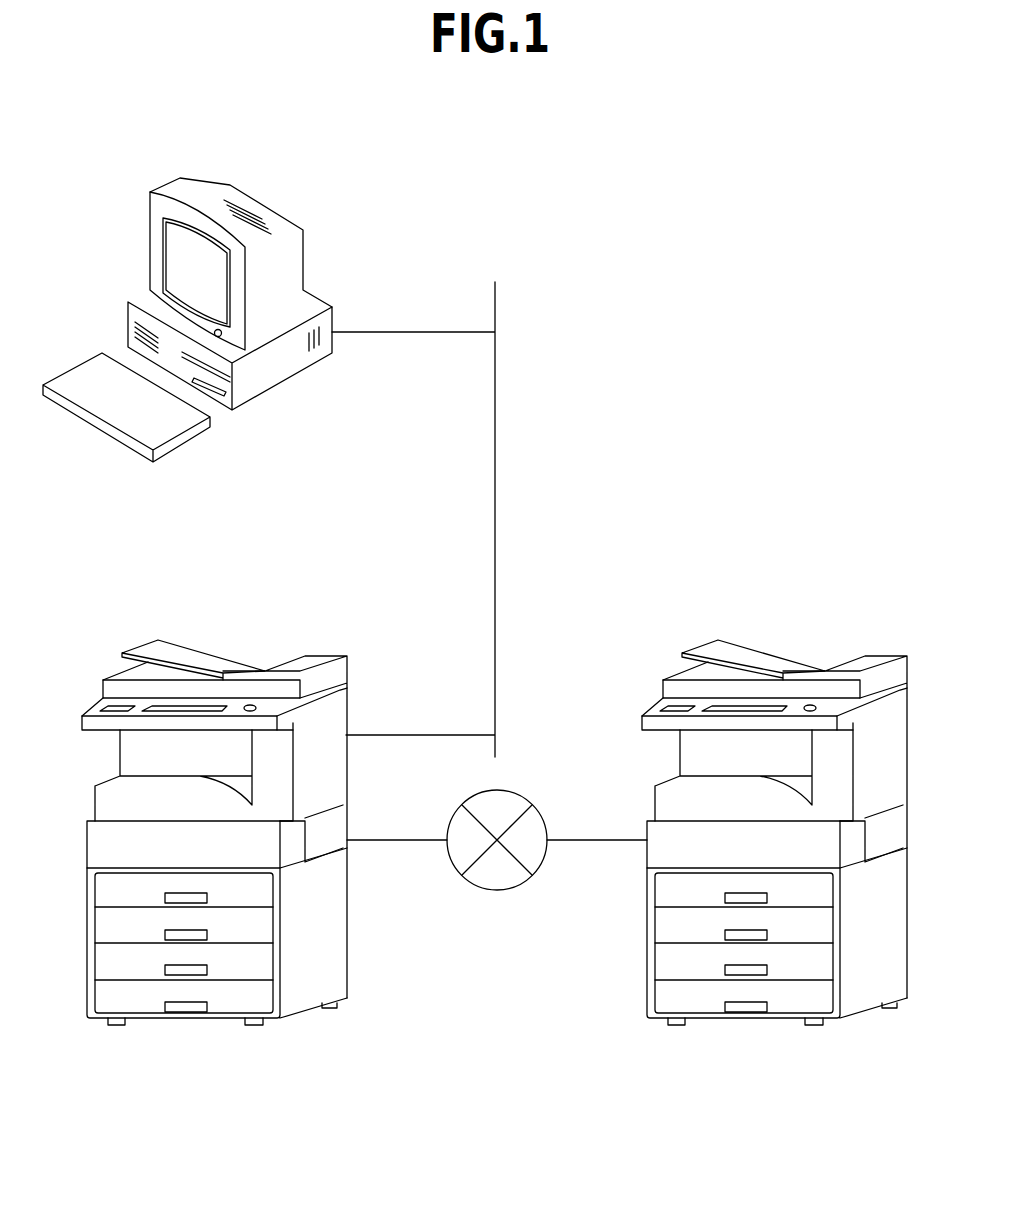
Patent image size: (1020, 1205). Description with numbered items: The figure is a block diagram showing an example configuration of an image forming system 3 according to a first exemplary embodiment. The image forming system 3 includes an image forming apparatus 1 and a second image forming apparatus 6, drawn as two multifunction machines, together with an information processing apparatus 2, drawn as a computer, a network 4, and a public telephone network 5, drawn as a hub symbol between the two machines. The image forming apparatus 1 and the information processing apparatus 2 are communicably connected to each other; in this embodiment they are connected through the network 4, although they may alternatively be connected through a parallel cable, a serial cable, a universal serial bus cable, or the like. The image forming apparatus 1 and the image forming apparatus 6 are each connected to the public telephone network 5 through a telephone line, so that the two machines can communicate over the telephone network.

The image forming apparatus 1 is at (346, 706).
The information processing apparatus 2 is at (270, 213).
The image forming system 3 is at (518, 117).
The network 4 is at (496, 292).
The public telephone network 5 is at (531, 805).
The image forming apparatus 6 is at (906, 716).